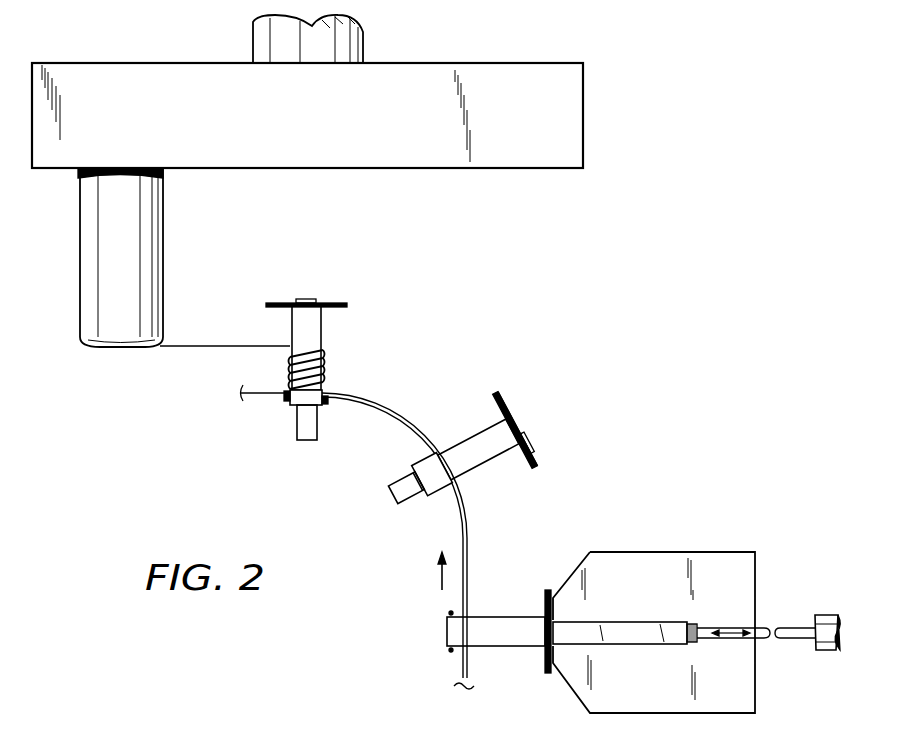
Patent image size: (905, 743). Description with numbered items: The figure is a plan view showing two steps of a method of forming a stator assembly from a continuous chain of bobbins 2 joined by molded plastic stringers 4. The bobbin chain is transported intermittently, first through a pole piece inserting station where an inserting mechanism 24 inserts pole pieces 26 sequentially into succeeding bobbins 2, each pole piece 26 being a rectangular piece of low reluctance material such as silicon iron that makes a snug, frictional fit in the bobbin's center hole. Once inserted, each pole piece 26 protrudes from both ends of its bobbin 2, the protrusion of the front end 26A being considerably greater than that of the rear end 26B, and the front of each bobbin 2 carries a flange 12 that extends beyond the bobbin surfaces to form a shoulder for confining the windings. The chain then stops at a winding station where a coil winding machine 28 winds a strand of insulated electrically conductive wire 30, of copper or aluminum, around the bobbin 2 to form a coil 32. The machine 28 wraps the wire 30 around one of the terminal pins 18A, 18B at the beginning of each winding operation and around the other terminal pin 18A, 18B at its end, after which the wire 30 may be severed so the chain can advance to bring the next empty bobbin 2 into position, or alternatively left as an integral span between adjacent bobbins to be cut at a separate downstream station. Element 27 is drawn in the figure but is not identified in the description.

The bobbin 2 is at (322, 333).
The stringer 4 is at (464, 522).
The flange 12 is at (278, 302).
The terminal pin 18A is at (326, 402).
The terminal pin 18B is at (288, 403).
The inserting mechanism 24 is at (688, 552).
The pole piece 26 is at (295, 428).
The front end of pole piece 26A is at (398, 488).
The rear end of pole piece 26B is at (516, 418).
The actuating rod 27 is at (788, 628).
The winding machine 28 is at (490, 170).
The wire 30 is at (205, 345).
The coil 32 is at (322, 376).